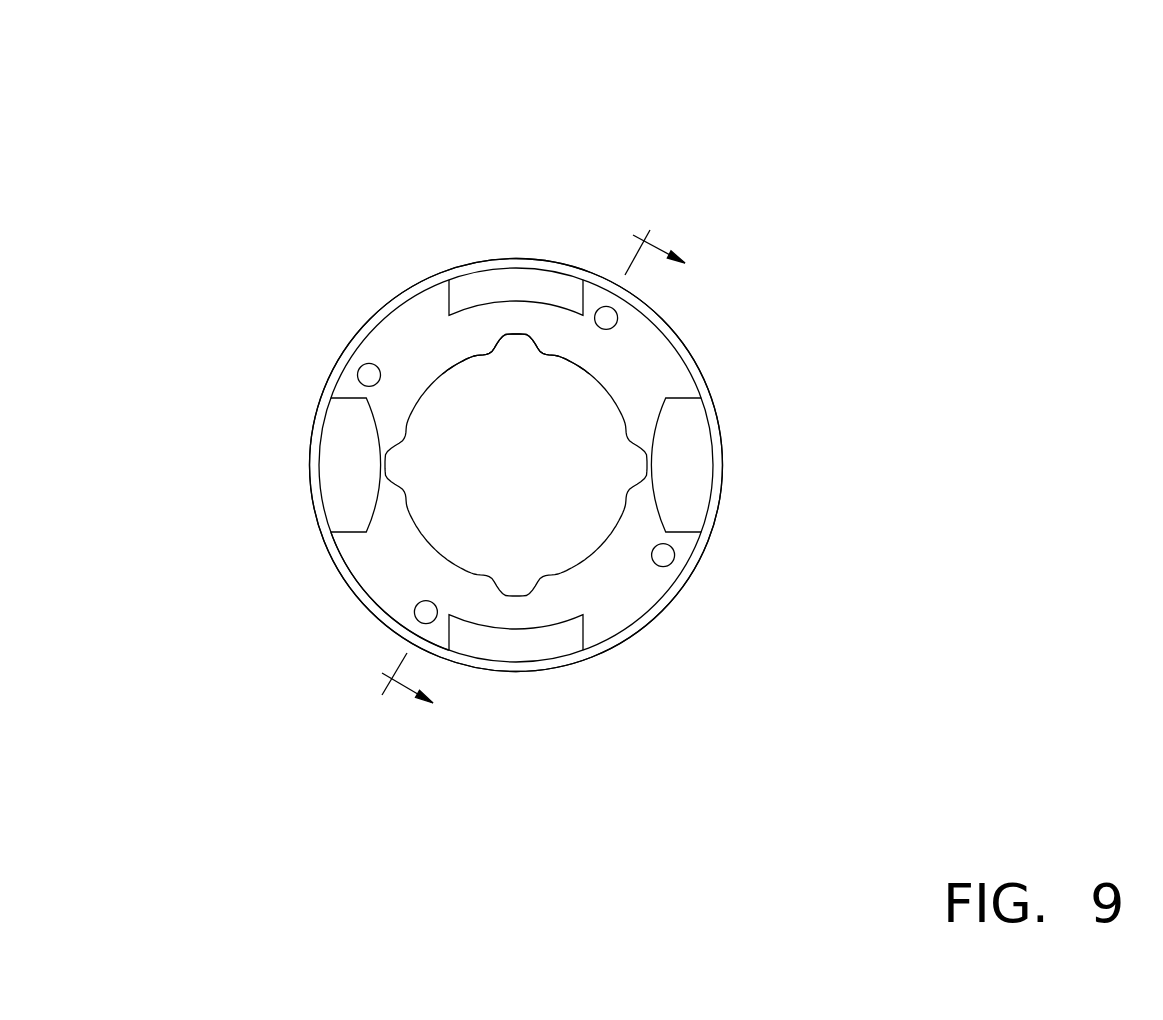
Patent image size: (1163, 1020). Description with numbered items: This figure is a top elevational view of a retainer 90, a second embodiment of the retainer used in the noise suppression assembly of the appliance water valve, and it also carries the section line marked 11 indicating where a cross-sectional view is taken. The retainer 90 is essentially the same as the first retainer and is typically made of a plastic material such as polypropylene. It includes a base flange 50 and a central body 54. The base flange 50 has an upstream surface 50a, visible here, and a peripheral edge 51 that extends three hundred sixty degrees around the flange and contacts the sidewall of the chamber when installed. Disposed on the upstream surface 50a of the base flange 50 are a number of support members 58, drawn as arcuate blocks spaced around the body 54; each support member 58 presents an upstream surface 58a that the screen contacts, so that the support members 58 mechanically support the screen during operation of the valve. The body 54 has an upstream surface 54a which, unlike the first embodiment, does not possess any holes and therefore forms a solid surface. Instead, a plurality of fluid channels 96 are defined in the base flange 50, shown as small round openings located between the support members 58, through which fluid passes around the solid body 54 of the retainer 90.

The retainer 90 is at (868, 188).
The base flange 50 is at (648, 355).
The upstream surface 50a is at (382, 585).
The peripheral edge 51 is at (722, 445).
The body 54 is at (588, 533).
The upstream surface 54a is at (440, 403).
The support member 58 is at (688, 488).
The upstream surface 58a is at (552, 642).
The fluid channels 96 is at (362, 384).
The section line 11- 11 is at (552, 484).